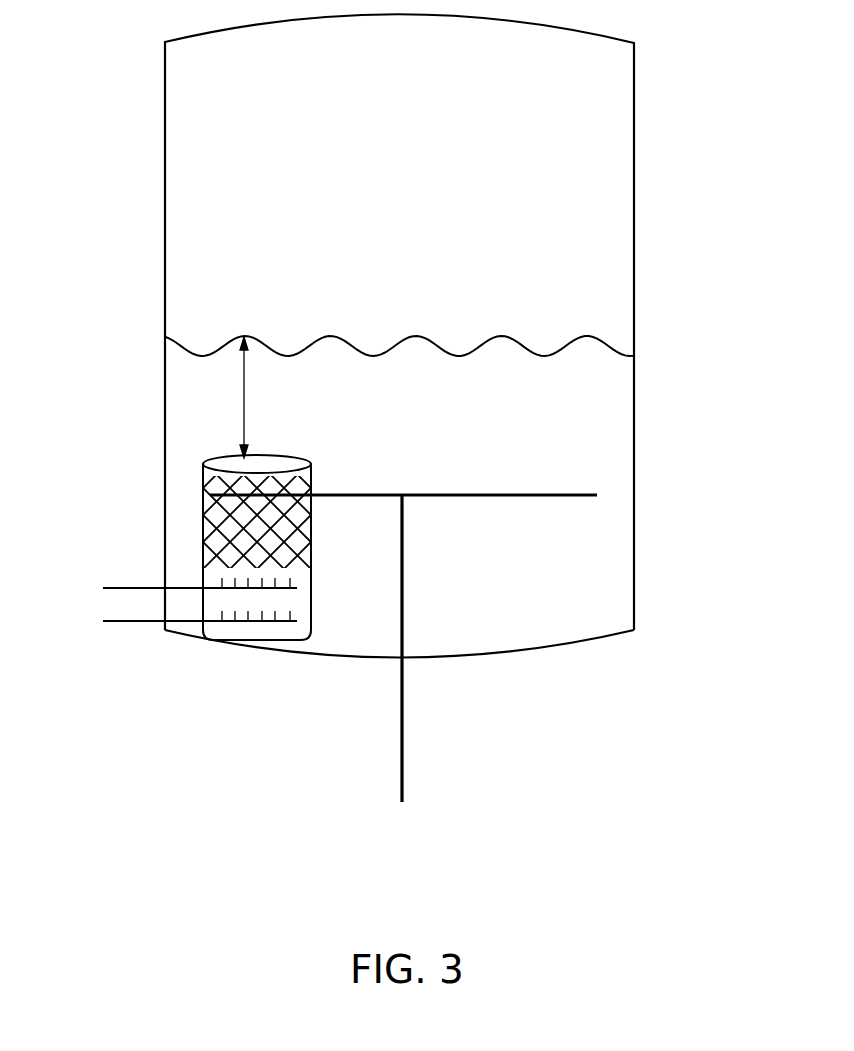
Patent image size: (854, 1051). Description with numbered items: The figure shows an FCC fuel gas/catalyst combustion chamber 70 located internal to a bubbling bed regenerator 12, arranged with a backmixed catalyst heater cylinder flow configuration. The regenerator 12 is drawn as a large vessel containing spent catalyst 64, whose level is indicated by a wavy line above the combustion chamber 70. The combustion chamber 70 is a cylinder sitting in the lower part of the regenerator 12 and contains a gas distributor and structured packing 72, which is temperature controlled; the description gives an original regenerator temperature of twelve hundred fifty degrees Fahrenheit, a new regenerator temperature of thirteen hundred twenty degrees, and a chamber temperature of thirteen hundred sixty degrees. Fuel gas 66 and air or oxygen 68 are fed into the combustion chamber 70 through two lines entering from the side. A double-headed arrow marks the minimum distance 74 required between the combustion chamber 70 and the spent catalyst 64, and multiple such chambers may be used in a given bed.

The regenerator 12 is at (634, 221).
The spent catalyst 64 is at (634, 354).
The fuel gas 66 is at (116, 585).
The air or oxygen 68 is at (154, 627).
The FCC fuel gas/catalyst combustion chamber 70 is at (268, 457).
The gas distributor and structured packing 72 is at (313, 559).
The minimum distance 74 is at (243, 410).